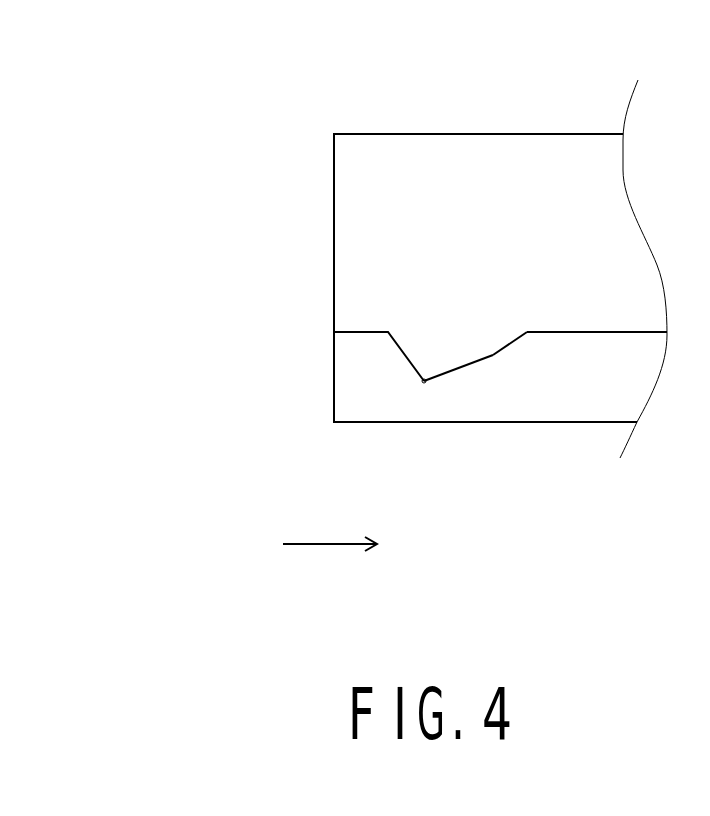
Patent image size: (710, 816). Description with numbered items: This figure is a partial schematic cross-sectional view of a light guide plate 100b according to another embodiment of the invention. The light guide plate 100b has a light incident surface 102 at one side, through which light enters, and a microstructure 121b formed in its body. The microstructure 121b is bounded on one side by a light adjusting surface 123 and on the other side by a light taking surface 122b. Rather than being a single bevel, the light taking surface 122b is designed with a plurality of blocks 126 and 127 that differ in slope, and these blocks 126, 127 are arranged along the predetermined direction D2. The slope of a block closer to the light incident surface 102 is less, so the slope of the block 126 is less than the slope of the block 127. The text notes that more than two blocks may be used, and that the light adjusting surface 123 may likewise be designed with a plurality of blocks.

The light guide plate 100b is at (103, 54).
The light incident surface 102 is at (333, 152).
The light adjusting surface 123 is at (404, 357).
The microstructure 121b is at (424, 382).
The light taking surface 122b is at (593, 511).
The block 126 is at (468, 368).
The block 127 is at (513, 345).
The predetermined direction D2 is at (330, 562).